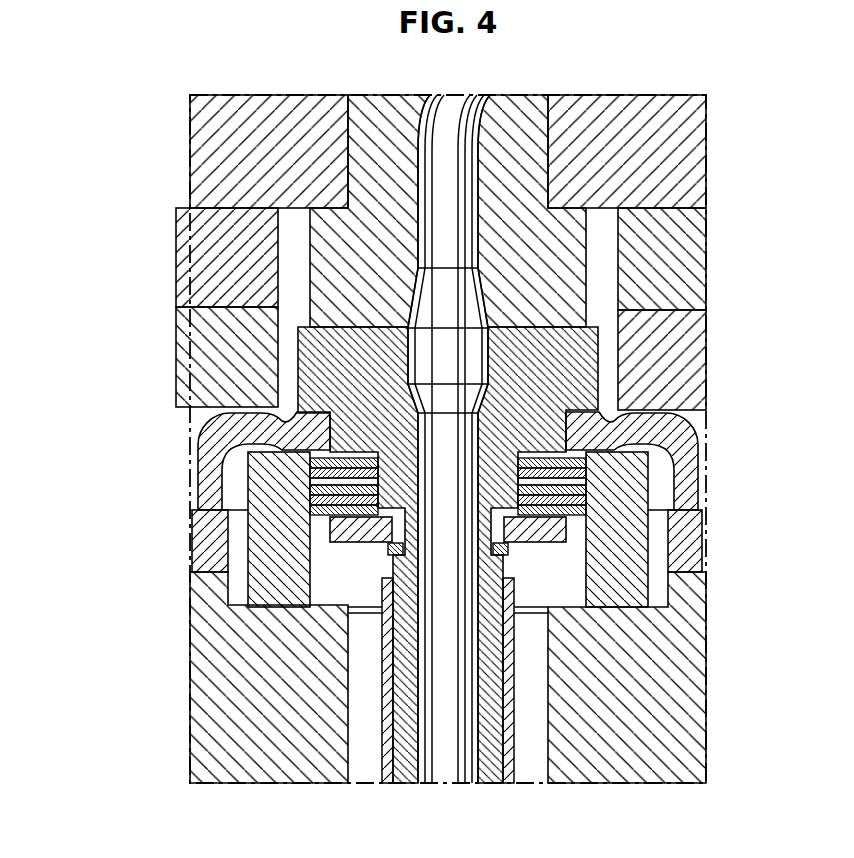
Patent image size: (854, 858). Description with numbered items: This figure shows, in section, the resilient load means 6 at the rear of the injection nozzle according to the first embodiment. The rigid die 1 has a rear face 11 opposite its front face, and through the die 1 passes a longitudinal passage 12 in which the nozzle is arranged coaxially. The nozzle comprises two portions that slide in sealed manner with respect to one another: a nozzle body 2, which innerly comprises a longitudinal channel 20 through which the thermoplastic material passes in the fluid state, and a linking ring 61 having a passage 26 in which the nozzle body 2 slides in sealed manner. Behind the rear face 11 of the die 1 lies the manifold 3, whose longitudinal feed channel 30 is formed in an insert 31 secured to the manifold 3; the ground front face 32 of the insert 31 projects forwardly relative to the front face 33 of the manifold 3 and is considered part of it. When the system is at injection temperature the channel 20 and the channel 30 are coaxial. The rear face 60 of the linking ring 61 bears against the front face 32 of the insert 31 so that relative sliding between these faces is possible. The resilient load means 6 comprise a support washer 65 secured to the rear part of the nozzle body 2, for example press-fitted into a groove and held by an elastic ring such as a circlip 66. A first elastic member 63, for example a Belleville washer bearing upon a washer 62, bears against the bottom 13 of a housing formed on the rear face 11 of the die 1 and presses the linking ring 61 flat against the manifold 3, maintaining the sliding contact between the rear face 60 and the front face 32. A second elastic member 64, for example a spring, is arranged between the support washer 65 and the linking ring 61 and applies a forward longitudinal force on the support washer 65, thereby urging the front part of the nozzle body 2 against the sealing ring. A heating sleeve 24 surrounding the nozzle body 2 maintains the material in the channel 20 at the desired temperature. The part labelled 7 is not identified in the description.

The die 1 is at (204, 656).
The nozzle body 2 is at (490, 713).
The manifold 3 is at (667, 160).
The resilient load means 6 is at (95, 452).
The housing part 7 is at (695, 335).
The rear face of the die 11 is at (663, 410).
The longitudinal passage 12 is at (363, 735).
The bottom of a housing 13 is at (203, 573).
The longitudinal channel 20 is at (463, 662).
The heating sleeve 24 is at (385, 693).
The passage 26 is at (392, 280).
The longitudinal feed channel 30 is at (442, 170).
The insert 31 is at (355, 247).
The front face of the insert 32 is at (357, 328).
The front face of the manifold 33 is at (657, 213).
The rear face of the linking ring 60 is at (547, 327).
The linking ring 61 is at (598, 378).
The washer 62 is at (196, 540).
The first elastic member 63 is at (688, 453).
The second elastic member 64 is at (560, 492).
The support washer 65 is at (585, 531).
The circlip 66 is at (510, 549).